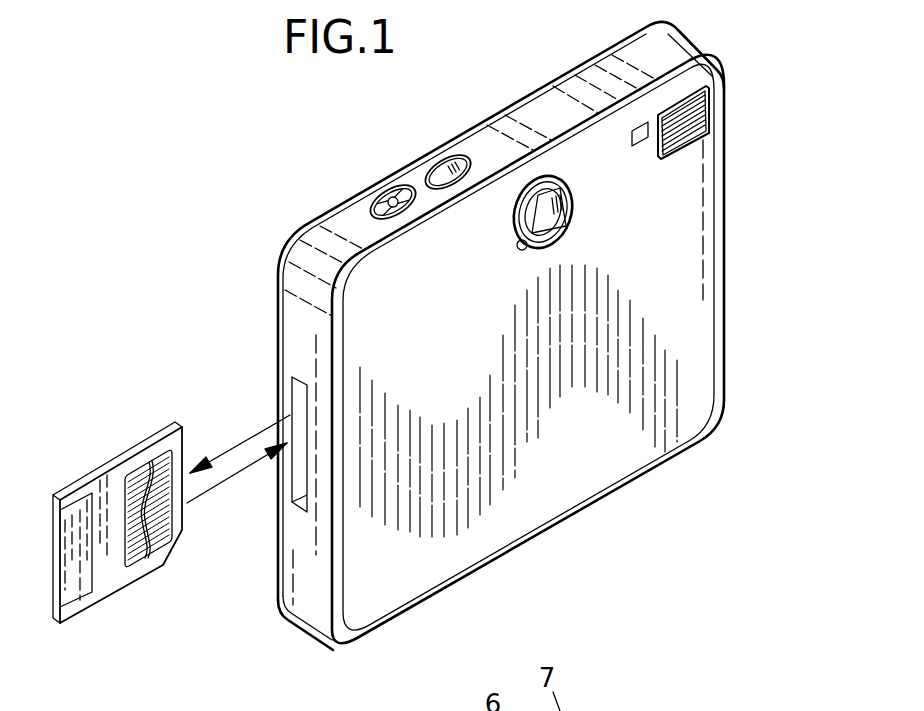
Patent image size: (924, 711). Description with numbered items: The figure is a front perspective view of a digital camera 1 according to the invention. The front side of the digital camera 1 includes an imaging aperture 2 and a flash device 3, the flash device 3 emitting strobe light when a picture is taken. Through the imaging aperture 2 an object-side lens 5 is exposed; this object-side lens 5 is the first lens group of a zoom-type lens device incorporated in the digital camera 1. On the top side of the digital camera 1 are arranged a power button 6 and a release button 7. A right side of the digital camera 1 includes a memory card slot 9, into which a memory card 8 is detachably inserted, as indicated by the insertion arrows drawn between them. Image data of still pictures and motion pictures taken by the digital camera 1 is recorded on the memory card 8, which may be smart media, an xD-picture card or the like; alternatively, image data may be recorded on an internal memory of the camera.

The digital camera 1 is at (550, 527).
The imaging aperture 2 is at (533, 245).
The flash device 3 is at (683, 145).
The object-side lens 5 is at (540, 213).
The power button 6 is at (446, 168).
The release button 7 is at (393, 200).
The memory card 8 is at (83, 612).
The memory card slot 9 is at (297, 503).